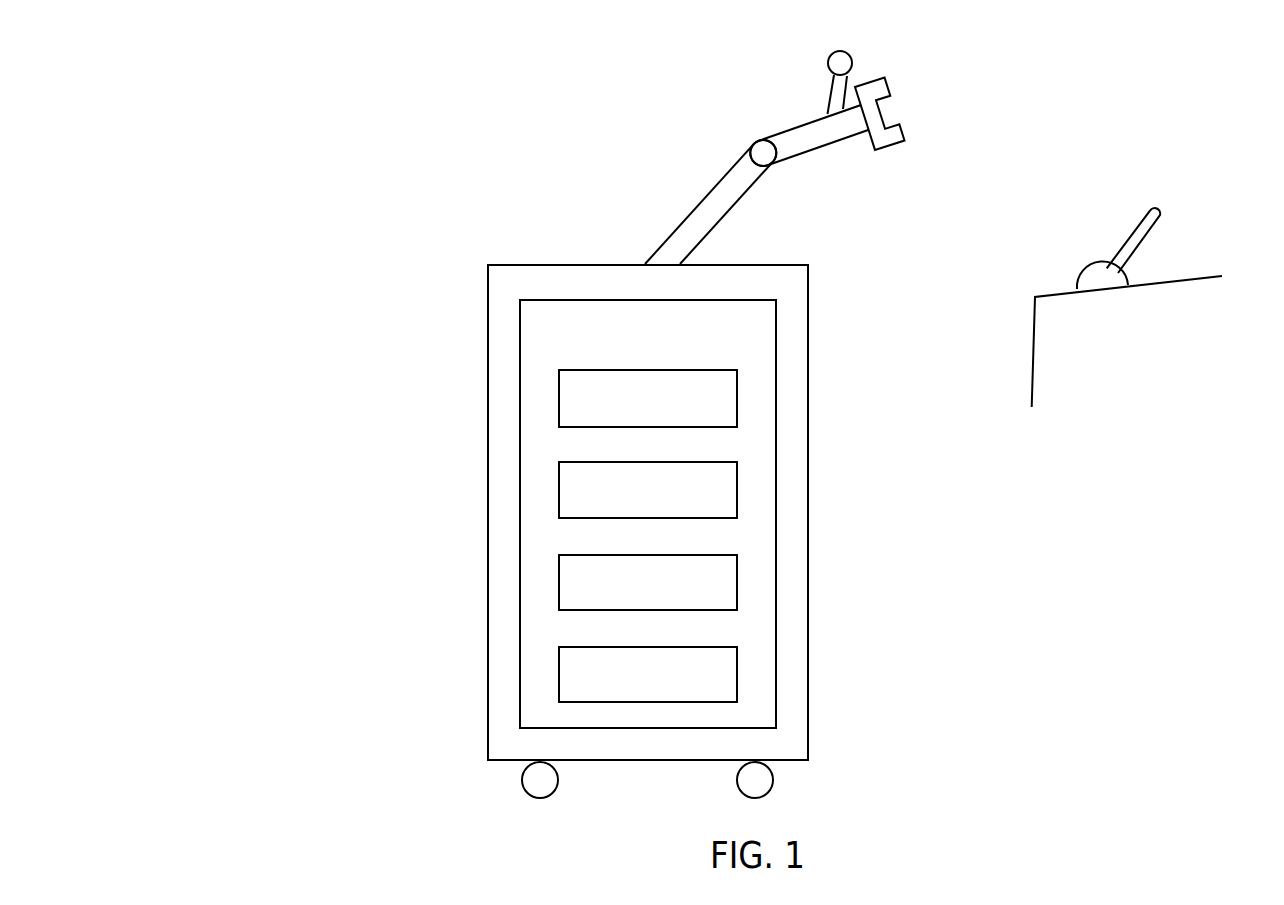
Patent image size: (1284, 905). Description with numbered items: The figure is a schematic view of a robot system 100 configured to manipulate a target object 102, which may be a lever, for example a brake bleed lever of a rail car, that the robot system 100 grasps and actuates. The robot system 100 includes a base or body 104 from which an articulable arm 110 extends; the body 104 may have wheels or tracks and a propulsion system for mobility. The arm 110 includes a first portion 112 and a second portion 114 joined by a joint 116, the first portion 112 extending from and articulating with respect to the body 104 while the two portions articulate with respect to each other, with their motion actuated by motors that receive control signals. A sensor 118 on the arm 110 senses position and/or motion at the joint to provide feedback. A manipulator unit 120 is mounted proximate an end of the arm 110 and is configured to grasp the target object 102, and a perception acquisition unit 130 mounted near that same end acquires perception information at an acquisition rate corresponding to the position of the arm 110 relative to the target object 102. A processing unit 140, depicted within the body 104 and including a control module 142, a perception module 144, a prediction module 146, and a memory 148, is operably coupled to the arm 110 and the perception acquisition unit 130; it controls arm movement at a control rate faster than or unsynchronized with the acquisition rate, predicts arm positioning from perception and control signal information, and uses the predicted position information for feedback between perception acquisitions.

The robot system 100 is at (368, 113).
The target object 102 is at (1180, 228).
The body 104 is at (810, 342).
The articulable arm 110 is at (713, 110).
The first portion 112 is at (689, 214).
The second portion 114 is at (811, 121).
The joint 116 is at (752, 149).
The sensor 118 is at (780, 177).
The manipulator unit 120 is at (891, 82).
The perception acquisition unit 130 is at (829, 62).
The processing unit 140 is at (520, 334).
The control module 142 is at (559, 399).
The perception module 144 is at (559, 491).
The prediction module 146 is at (559, 583).
The memory 148 is at (559, 675).